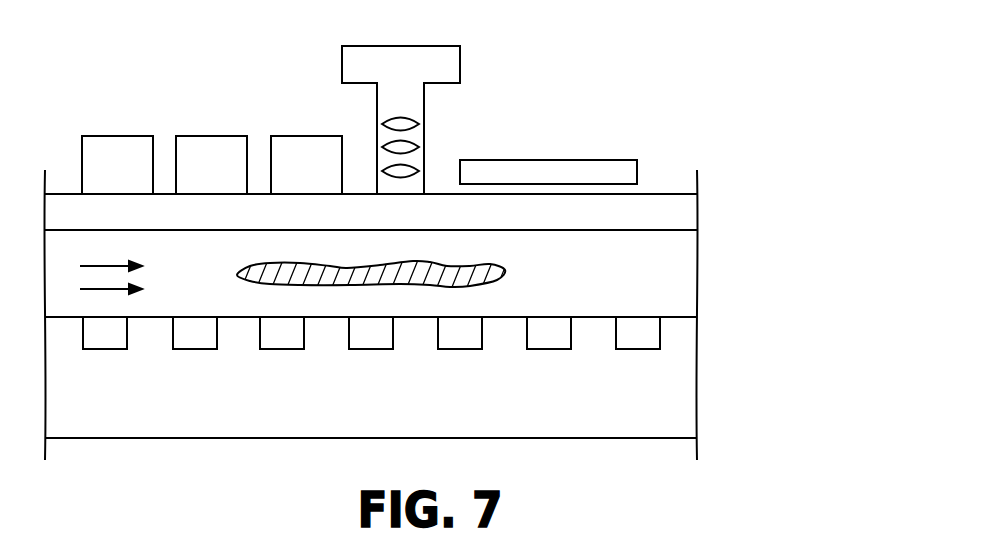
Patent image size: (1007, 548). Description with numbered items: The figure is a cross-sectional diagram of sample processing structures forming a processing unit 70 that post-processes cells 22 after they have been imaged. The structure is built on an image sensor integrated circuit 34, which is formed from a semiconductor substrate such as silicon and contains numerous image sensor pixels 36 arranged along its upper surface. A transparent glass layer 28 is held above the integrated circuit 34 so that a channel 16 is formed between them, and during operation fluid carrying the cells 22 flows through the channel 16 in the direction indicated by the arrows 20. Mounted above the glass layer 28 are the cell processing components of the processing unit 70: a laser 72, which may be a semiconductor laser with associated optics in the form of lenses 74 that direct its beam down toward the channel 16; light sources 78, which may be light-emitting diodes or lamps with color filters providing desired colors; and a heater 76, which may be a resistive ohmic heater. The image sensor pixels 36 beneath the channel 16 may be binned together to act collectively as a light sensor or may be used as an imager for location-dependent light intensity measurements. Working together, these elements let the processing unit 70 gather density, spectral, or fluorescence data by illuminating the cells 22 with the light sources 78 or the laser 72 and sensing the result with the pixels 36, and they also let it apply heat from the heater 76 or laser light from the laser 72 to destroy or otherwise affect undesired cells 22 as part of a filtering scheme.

The processing unit 70 is at (592, 47).
The laser 72 is at (455, 65).
The lenses 74 is at (420, 147).
The heater 76 is at (608, 165).
The light sources 78 is at (293, 142).
The glass layer 28 is at (457, 224).
The channel 16 is at (637, 284).
The arrows 20 is at (107, 265).
The cells 22 is at (270, 264).
The image sensor integrated circuit 34 is at (267, 407).
The image sensor pixels 36 is at (542, 342).